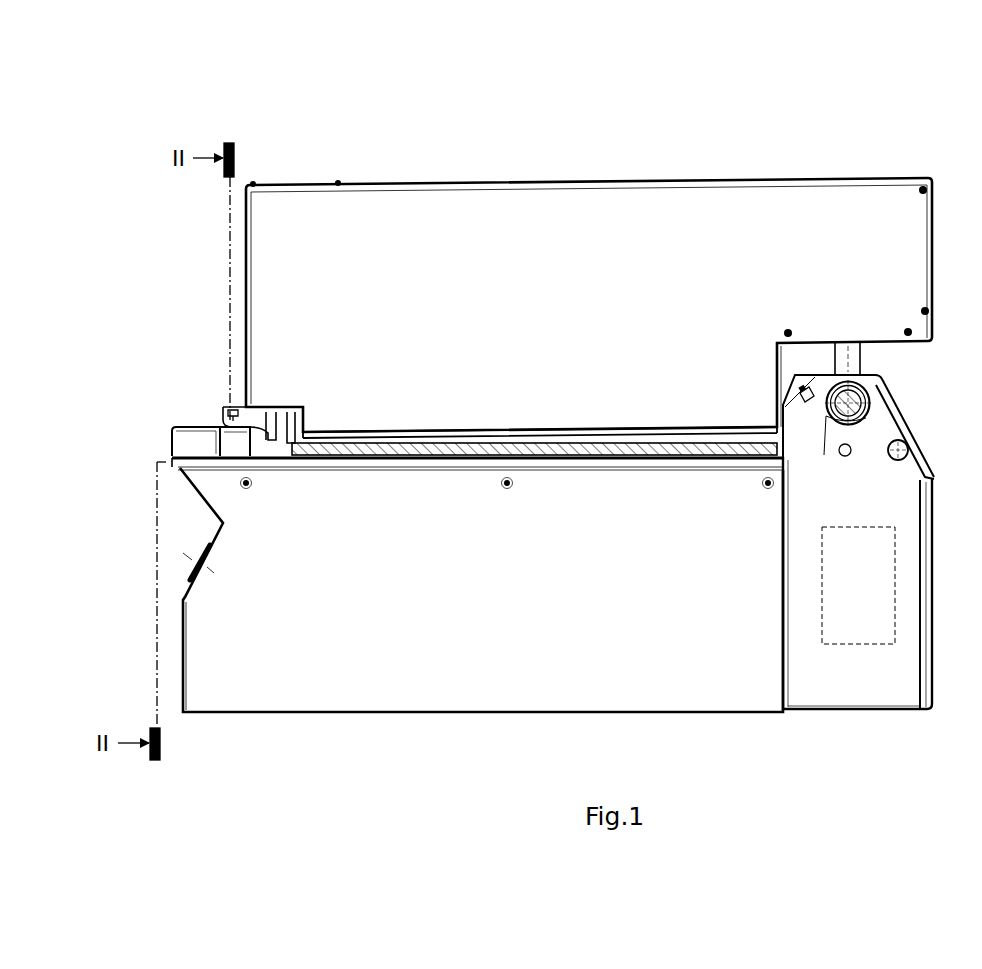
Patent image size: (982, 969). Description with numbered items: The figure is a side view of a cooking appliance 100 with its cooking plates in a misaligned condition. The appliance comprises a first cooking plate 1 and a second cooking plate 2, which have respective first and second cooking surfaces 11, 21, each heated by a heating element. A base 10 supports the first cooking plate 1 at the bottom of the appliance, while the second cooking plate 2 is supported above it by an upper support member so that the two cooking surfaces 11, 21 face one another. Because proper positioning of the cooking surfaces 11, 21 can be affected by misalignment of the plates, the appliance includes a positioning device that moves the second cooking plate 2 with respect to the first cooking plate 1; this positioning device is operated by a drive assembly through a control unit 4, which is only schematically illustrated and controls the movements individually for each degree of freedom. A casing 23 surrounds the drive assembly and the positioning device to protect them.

The cooking appliance 100 is at (408, 116).
The casing 23 is at (350, 235).
The second cooking plate 2 is at (558, 430).
The second cooking surface 21 is at (678, 437).
The first cooking plate 1 is at (387, 448).
The first cooking surface 11 is at (703, 438).
The base 10 is at (447, 630).
The control unit 4 is at (850, 632).